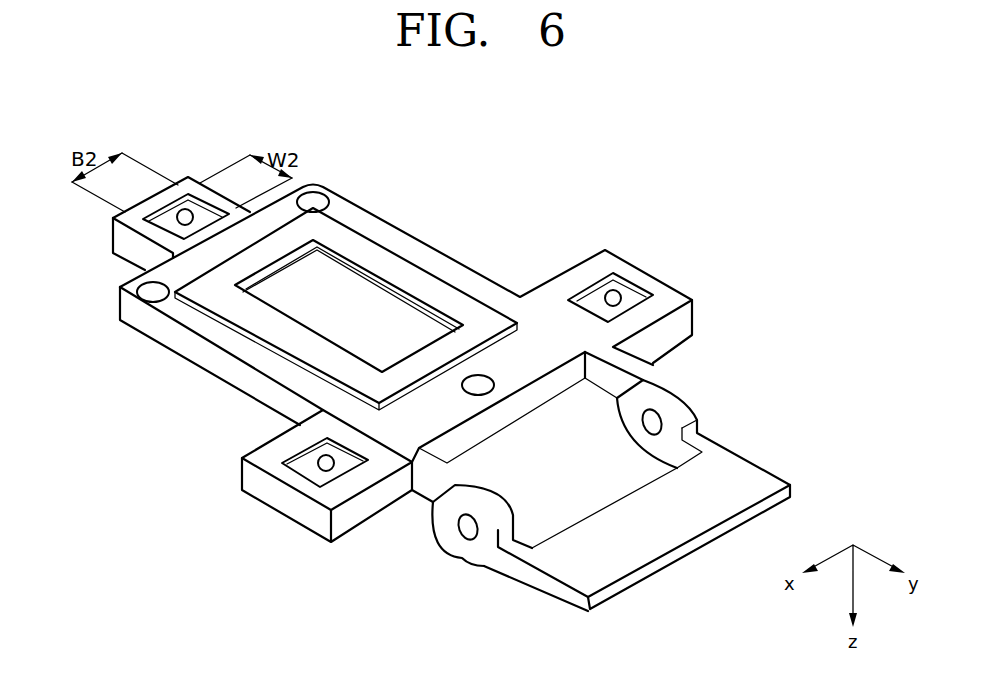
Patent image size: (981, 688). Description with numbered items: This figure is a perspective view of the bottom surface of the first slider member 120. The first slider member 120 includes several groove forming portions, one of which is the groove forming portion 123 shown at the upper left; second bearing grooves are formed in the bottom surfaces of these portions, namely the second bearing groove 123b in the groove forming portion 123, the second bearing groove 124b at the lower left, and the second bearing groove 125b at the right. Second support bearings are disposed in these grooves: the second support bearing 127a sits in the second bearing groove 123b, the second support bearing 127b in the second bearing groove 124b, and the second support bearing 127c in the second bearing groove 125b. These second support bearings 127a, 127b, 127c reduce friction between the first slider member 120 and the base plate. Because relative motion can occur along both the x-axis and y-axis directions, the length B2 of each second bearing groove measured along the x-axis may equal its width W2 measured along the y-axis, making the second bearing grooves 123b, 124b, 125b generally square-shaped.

The first slider member 120 is at (802, 279).
The groove forming portion 123 is at (122, 238).
The second bearing groove 123b is at (207, 216).
The second support bearing 127a is at (182, 206).
The second bearing groove 125b is at (578, 298).
The second support bearing 127c is at (614, 296).
The second bearing groove 124b is at (302, 470).
The second support bearing 127b is at (320, 460).